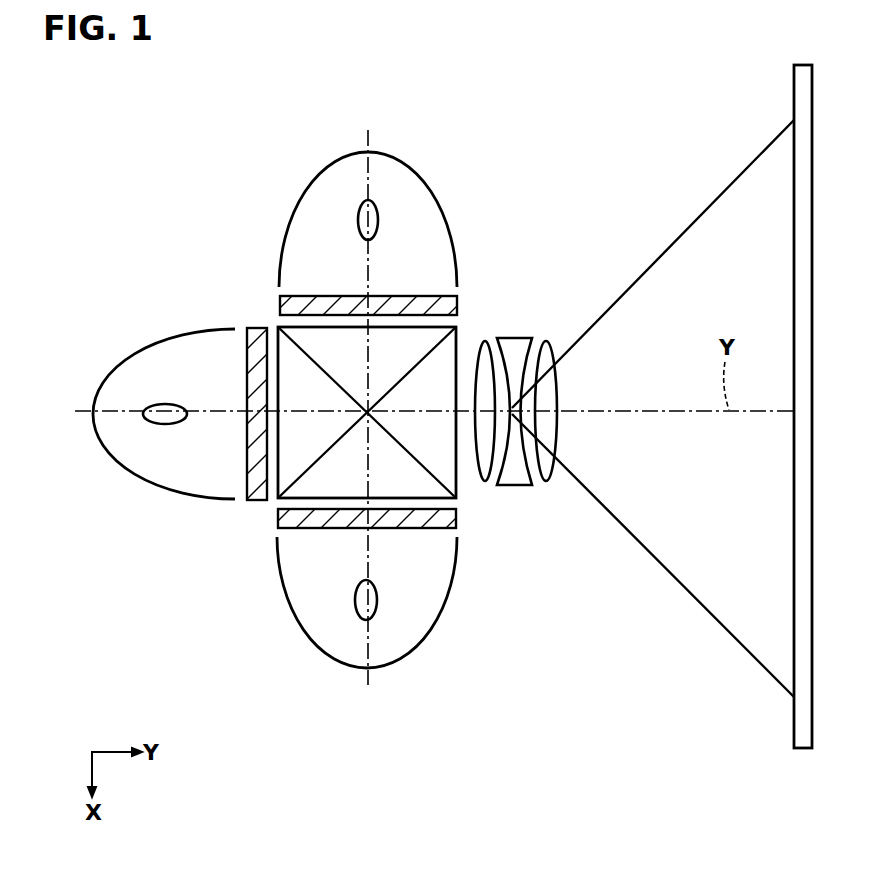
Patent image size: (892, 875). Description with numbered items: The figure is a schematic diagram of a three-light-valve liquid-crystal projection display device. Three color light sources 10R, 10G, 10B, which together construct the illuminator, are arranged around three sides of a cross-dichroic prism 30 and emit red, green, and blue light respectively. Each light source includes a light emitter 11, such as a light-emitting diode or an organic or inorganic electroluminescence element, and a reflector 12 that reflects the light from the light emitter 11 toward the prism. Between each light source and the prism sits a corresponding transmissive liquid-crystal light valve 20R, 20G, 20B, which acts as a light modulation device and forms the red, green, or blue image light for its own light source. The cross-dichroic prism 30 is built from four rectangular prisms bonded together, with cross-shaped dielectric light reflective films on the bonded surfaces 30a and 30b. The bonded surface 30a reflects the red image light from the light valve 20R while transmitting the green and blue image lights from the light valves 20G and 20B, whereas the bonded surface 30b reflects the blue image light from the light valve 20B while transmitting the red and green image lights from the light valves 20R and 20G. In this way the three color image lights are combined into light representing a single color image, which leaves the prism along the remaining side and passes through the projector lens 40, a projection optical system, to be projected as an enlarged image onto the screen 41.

The light source 10R is at (440, 170).
The light source 10G is at (114, 344).
The light source 10B is at (294, 652).
The light emitter 11 is at (357, 221).
The reflector 12 is at (282, 250).
The liquid-crystal light valve 20R is at (458, 300).
The liquid-crystal light valve 20G is at (256, 328).
The liquid-crystal light valve 20B is at (278, 516).
The cross-dichroic prism 30 is at (415, 395).
The bonded surface 30a is at (428, 472).
The bonded surface 30b is at (428, 352).
The projector lens 40 is at (553, 492).
The screen 41 is at (794, 533).